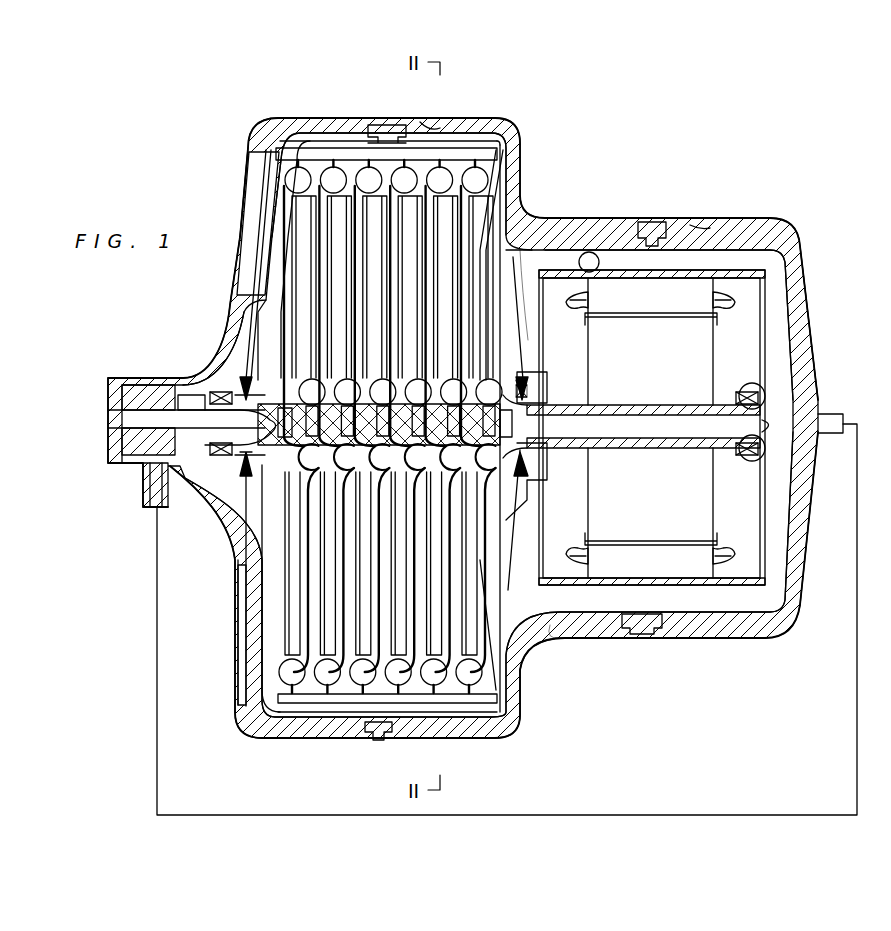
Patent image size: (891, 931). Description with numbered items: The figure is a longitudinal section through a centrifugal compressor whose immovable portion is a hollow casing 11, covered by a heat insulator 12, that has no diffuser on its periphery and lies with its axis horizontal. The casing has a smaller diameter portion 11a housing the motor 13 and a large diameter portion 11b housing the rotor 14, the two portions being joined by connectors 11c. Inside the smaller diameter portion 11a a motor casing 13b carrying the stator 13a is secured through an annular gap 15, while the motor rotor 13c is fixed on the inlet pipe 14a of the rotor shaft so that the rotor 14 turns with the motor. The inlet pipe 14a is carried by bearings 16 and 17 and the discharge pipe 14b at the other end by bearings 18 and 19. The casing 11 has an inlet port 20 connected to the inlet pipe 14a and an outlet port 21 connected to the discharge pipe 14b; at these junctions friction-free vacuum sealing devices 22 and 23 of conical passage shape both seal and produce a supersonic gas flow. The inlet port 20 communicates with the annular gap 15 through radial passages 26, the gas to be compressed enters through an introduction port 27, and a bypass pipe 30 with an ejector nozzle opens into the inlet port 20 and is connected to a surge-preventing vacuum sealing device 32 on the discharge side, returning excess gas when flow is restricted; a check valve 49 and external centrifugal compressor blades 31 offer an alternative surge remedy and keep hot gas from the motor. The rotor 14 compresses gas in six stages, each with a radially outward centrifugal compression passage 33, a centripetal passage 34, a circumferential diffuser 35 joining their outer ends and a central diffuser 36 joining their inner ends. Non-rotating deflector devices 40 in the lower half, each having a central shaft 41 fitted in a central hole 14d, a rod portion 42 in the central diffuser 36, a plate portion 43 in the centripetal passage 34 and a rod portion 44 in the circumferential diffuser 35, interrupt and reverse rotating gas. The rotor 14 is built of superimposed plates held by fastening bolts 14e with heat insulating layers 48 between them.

The casing 11 is at (670, 80).
The smaller diameter portion 11a is at (705, 218).
The large diameter portion 11b is at (470, 140).
The connectors 11c is at (386, 124).
The heat insulator 12 is at (560, 250).
The motor 13 is at (705, 275).
The stator 13a is at (650, 265).
The motor casing 13b is at (768, 315).
The rotor of the motor 13c is at (700, 508).
The rotor 14 is at (322, 150).
The inlet pipe 14a is at (650, 406).
The discharge pipe 14b is at (235, 470).
The central hole 14d is at (525, 500).
The fastening bolts 14e is at (262, 150).
The annular gap 15 is at (590, 255).
The bearing 16 is at (548, 380).
The bearing 17 is at (745, 392).
The bearing 18 is at (240, 360).
The bearing 19 is at (212, 392).
The inlet port 20 is at (812, 378).
The outlet port 21 is at (110, 420).
The vacuum sealing device 22 is at (700, 448).
The vacuum sealing device 23 is at (185, 395).
The radial passages 26 is at (780, 462).
The introduction port 27 is at (594, 270).
The bypass pipe 30 is at (157, 710).
The centrifugal compressor blades 31 is at (525, 318).
The vacuum sealing device 32 is at (150, 462).
The centrifugal compression passage 33 is at (440, 243).
The centripetal passage 34 is at (450, 228).
The circumferential diffuser 35 is at (478, 182).
The central diffuser 36 is at (322, 762).
The gas flow rotation preventing device 40 is at (530, 652).
The central shaft 41 is at (300, 580).
The rod portion 42 is at (300, 545).
The plate portion 43 is at (260, 660).
The rod portion 44 is at (292, 672).
The heat insulating layers 48 is at (299, 158).
The check valve 49 is at (590, 232).